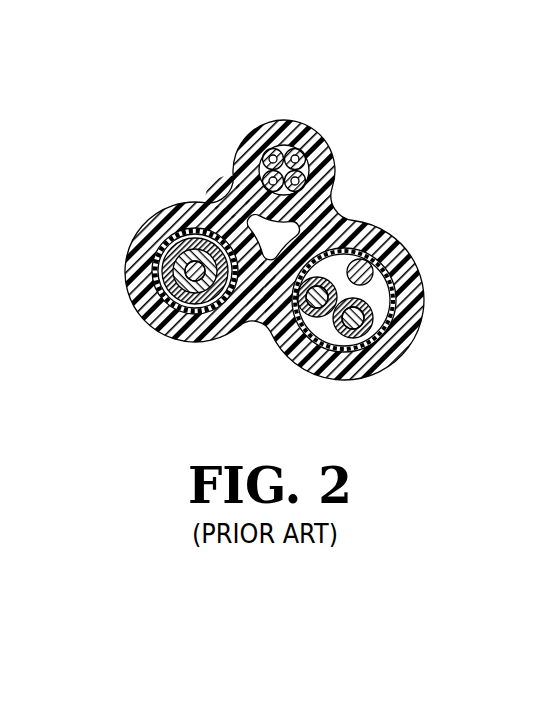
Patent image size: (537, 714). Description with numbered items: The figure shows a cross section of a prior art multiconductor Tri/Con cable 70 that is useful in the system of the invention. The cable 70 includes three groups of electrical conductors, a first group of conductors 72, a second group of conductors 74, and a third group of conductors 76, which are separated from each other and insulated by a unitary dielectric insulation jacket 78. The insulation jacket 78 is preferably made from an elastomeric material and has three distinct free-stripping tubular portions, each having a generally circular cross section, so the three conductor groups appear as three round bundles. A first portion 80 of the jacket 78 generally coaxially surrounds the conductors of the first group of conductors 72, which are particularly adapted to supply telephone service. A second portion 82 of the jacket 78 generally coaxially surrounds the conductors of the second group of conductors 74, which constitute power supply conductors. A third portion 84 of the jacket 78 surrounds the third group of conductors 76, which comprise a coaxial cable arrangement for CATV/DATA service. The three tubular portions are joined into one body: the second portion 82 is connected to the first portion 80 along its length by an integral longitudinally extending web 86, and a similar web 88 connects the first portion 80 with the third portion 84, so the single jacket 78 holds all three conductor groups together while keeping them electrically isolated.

The Tri/Con cable 70 is at (173, 395).
The first group of conductors 72 is at (315, 108).
The second group of conductors 74 is at (353, 349).
The third group of conductors 76 is at (128, 214).
The insulation jacket 78 is at (327, 352).
The first portion of jacket 80 is at (320, 150).
The second portion of jacket 82 is at (405, 285).
The third portion of jacket 84 is at (147, 313).
The web 86 is at (317, 222).
The web 88 is at (243, 210).